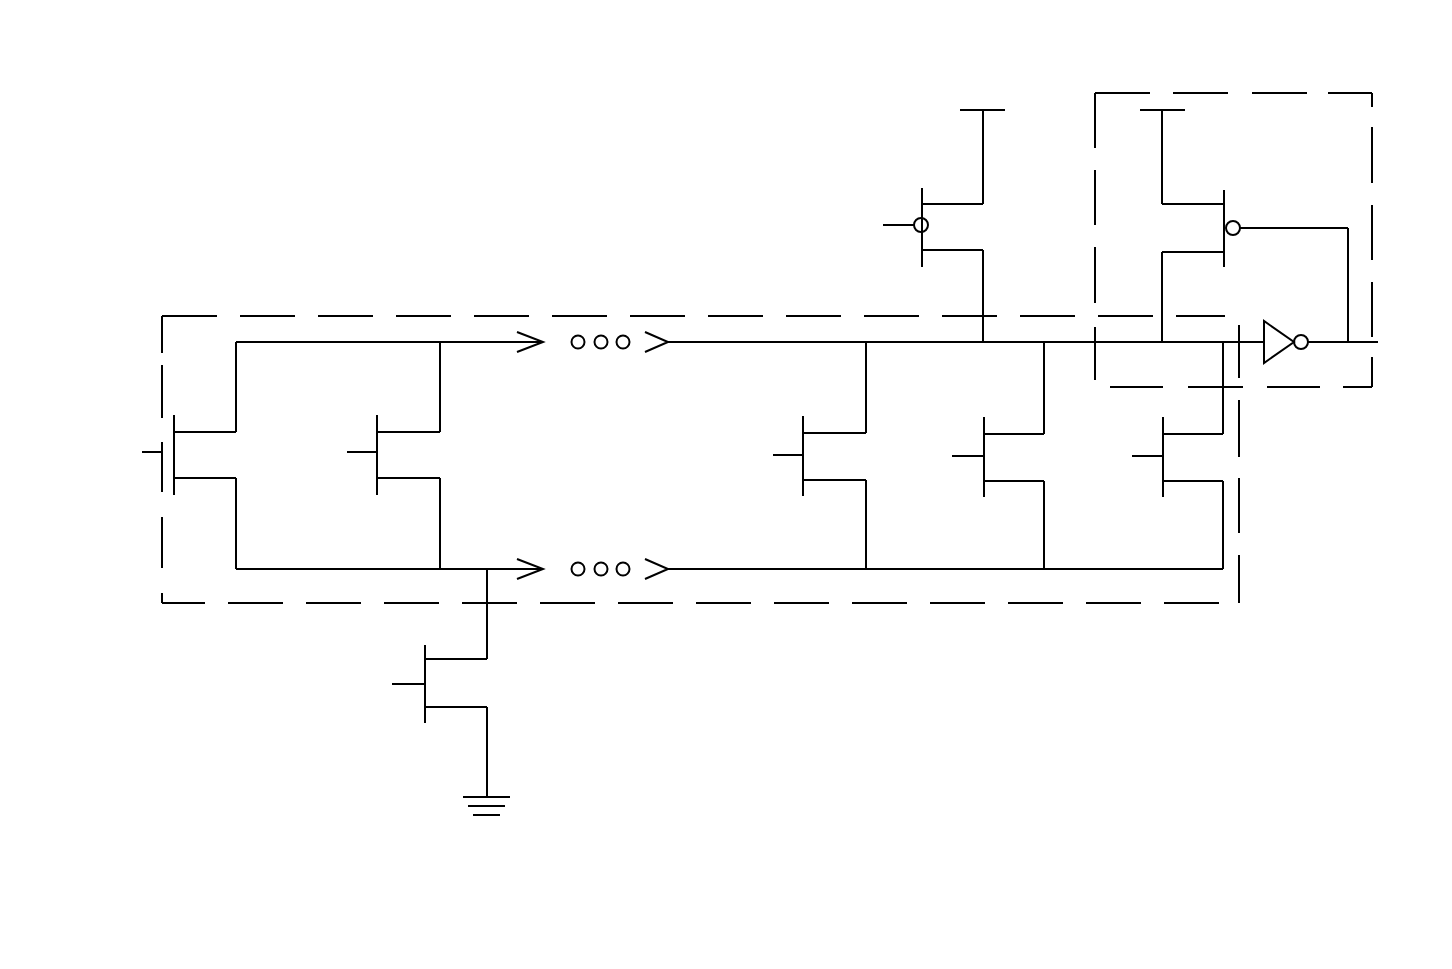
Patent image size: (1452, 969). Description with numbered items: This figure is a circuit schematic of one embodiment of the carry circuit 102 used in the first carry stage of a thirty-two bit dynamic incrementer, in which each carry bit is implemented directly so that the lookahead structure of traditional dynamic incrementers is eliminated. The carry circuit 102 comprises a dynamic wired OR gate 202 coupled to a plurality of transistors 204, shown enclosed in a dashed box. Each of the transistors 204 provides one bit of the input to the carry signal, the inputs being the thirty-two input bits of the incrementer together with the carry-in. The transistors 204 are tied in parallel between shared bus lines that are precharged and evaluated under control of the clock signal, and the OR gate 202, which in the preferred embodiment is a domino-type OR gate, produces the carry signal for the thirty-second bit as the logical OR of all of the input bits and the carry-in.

The carry circuit 102 is at (740, 837).
The dynamic wired OR gate 202 is at (1277, 92).
The plurality of transistors 204 is at (337, 314).